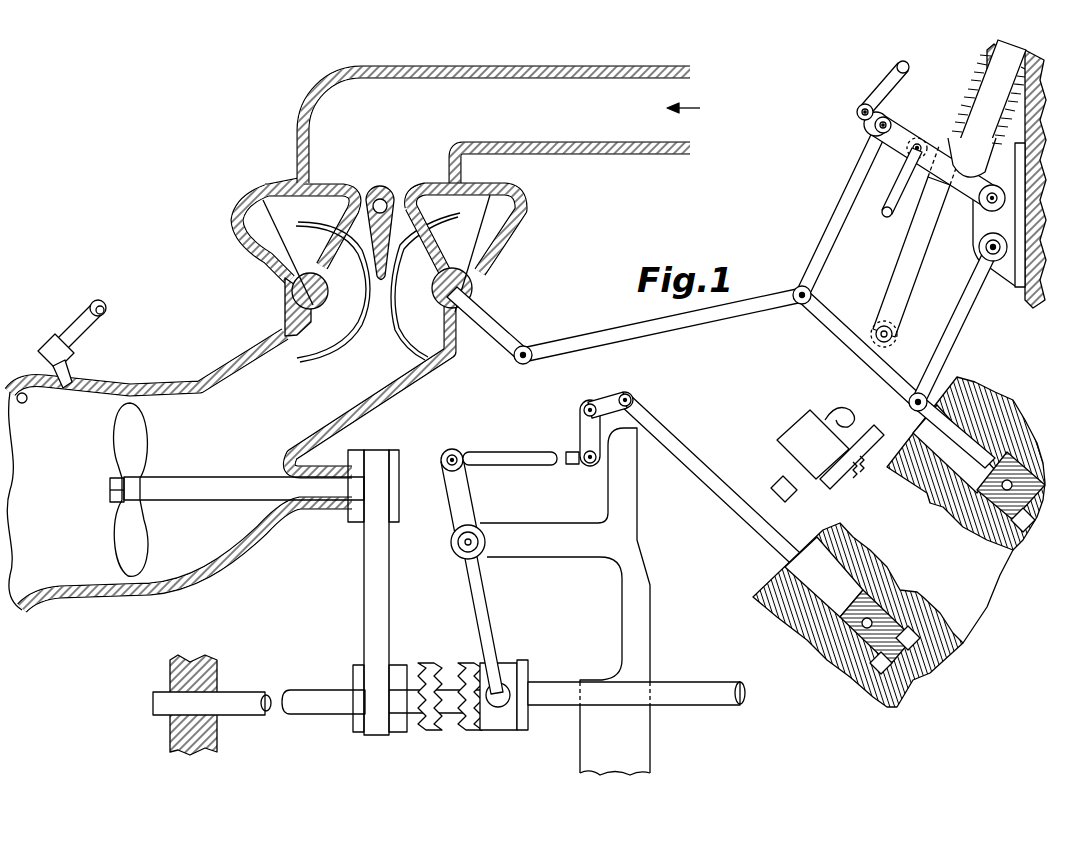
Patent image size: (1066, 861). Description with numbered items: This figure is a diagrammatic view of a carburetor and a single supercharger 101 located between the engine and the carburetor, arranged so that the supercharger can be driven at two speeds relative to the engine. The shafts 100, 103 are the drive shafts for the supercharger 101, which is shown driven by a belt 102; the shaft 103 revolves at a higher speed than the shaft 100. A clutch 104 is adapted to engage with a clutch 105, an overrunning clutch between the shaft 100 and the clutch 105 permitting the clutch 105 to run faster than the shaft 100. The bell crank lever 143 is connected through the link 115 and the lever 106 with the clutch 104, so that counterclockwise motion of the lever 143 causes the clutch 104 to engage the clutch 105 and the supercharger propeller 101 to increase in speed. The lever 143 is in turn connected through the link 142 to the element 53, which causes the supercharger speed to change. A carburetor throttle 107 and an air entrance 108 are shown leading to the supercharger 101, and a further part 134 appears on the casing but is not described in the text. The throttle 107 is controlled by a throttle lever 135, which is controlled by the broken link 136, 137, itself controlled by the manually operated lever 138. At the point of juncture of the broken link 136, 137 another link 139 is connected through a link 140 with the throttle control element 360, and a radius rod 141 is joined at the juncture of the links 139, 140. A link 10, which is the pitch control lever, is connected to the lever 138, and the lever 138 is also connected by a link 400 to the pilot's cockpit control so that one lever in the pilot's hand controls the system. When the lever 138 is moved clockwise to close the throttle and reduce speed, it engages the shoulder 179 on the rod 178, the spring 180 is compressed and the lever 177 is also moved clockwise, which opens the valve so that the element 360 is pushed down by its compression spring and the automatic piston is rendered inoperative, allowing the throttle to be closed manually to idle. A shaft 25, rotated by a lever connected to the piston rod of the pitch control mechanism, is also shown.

The air entrance 108 is at (501, 131).
The carburetor throttle 107 is at (458, 230).
The choke actuating rod 134 is at (108, 310).
The supercharger 101 is at (148, 424).
The belt 102 is at (362, 585).
The shaft 100 is at (305, 685).
The clutch 105 is at (425, 735).
The clutch 104 is at (480, 730).
The shaft 103 is at (552, 682).
The lever 106 is at (490, 492).
The link 115 is at (515, 440).
The bell crank lever 143 is at (606, 395).
The link 142 is at (683, 443).
The throttle lever 135 is at (512, 335).
The broken link 136 is at (668, 331).
The broken link 137 is at (827, 221).
The link 139 is at (816, 324).
The rod 178 is at (912, 250).
The lever 177 is at (915, 345).
The radius rod 141 is at (969, 325).
The link 400 is at (886, 100).
The manually operated lever 138 is at (857, 116).
The link 10 is at (893, 207).
The spring 180 is at (990, 64).
The shoulder 179 is at (972, 108).
The link 140 is at (990, 402).
The throttle control element 360 is at (988, 524).
The element 53 is at (888, 597).
The shaft 25 is at (842, 405).